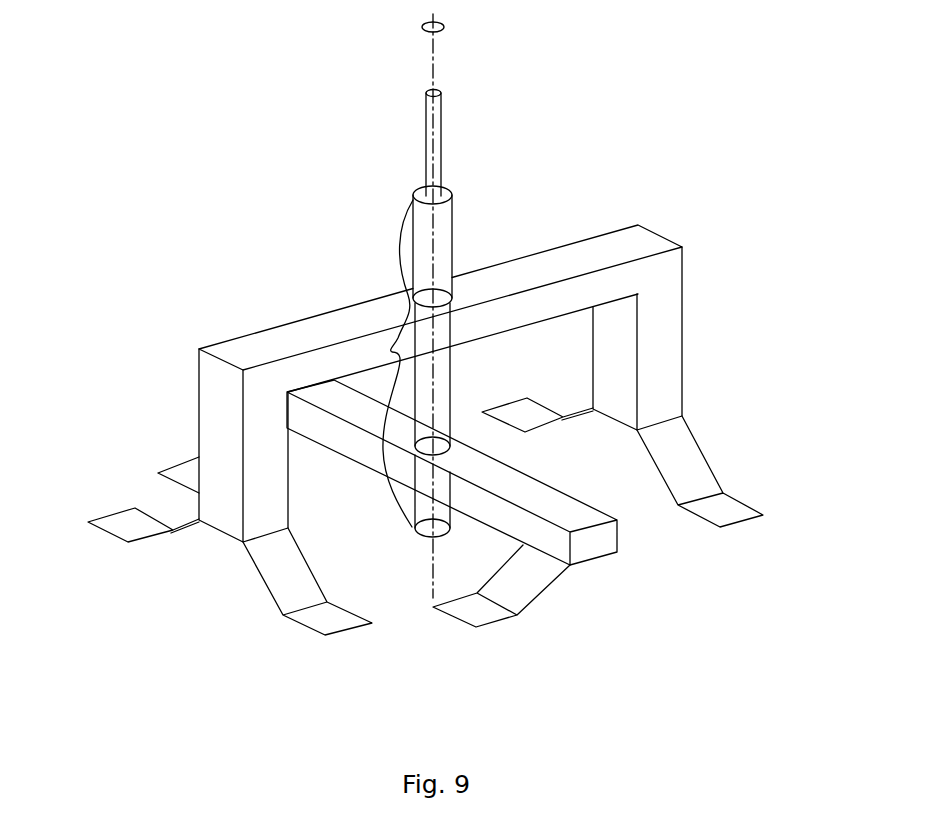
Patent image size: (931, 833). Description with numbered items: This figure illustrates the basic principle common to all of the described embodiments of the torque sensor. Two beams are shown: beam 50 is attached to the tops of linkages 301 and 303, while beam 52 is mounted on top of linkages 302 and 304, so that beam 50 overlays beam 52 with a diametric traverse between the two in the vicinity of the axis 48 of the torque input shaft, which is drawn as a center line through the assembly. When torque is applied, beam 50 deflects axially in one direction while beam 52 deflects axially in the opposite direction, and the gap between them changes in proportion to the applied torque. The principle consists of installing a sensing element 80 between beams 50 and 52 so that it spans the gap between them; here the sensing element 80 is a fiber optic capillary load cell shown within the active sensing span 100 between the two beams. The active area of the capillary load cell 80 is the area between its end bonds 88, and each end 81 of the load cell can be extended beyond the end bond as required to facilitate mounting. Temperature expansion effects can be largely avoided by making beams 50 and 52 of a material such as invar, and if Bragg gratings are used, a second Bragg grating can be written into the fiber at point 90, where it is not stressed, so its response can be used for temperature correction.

The axis 48 is at (422, 29).
The beam 50 is at (673, 379).
The beam 52 is at (373, 470).
The sensing element 80 is at (451, 386).
The end 81 is at (453, 228).
The end bond 88 is at (455, 195).
The point 90 is at (426, 143).
The active sensing span 100 is at (378, 363).
The linkage 301 is at (690, 462).
The linkage 302 is at (457, 618).
The linkage 303 is at (260, 572).
The linkage 304 is at (158, 473).